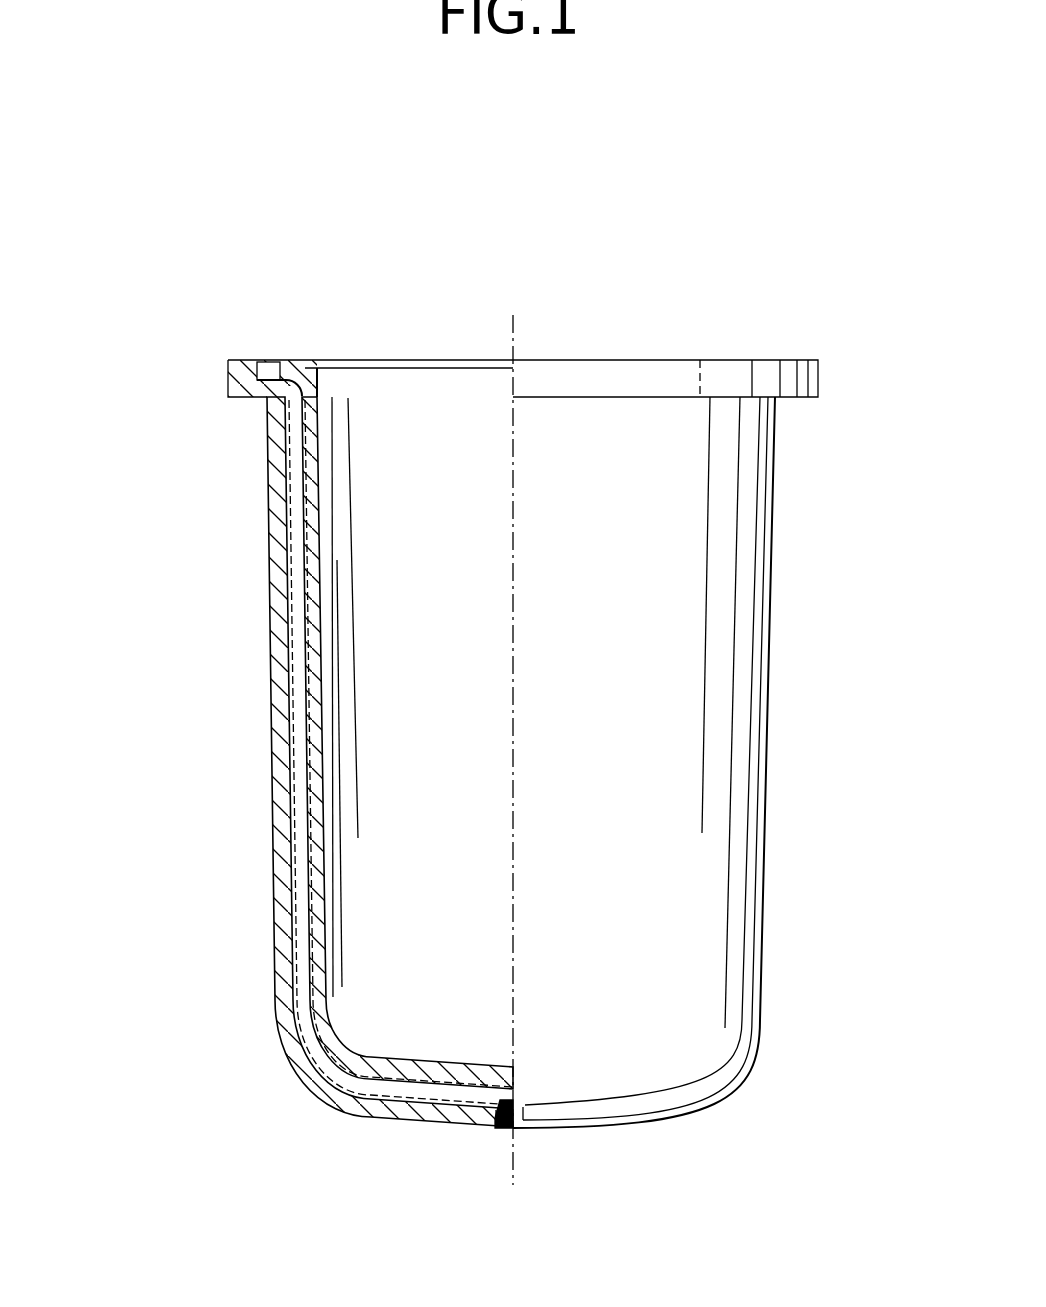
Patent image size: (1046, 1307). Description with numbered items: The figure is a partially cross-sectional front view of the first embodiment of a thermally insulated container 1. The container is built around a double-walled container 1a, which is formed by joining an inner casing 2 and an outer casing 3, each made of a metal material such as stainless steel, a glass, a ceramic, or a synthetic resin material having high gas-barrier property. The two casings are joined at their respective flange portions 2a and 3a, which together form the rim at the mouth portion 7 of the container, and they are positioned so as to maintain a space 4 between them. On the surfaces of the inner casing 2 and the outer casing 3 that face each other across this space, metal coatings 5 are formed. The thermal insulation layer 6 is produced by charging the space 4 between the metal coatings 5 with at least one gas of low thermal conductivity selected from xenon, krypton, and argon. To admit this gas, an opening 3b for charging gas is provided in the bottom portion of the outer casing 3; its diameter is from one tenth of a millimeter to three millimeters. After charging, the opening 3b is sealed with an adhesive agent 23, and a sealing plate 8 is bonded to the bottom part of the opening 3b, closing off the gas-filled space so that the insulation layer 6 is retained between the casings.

The thermally insulated container 1 is at (632, 290).
The double-walled container 1a is at (172, 545).
The inner casing 2 is at (304, 647).
The flange portion 2a is at (276, 358).
The outer casing 3 is at (268, 572).
The flange portion 3a is at (240, 358).
The opening for charging gas 3b is at (507, 1128).
The space 4 is at (296, 850).
The metal coating 5 is at (300, 760).
The thermal insulation layer 6 is at (385, 1082).
The mouth portion 7 is at (446, 360).
The sealing plate 8 is at (500, 1126).
The adhesive agent 23 is at (518, 1128).